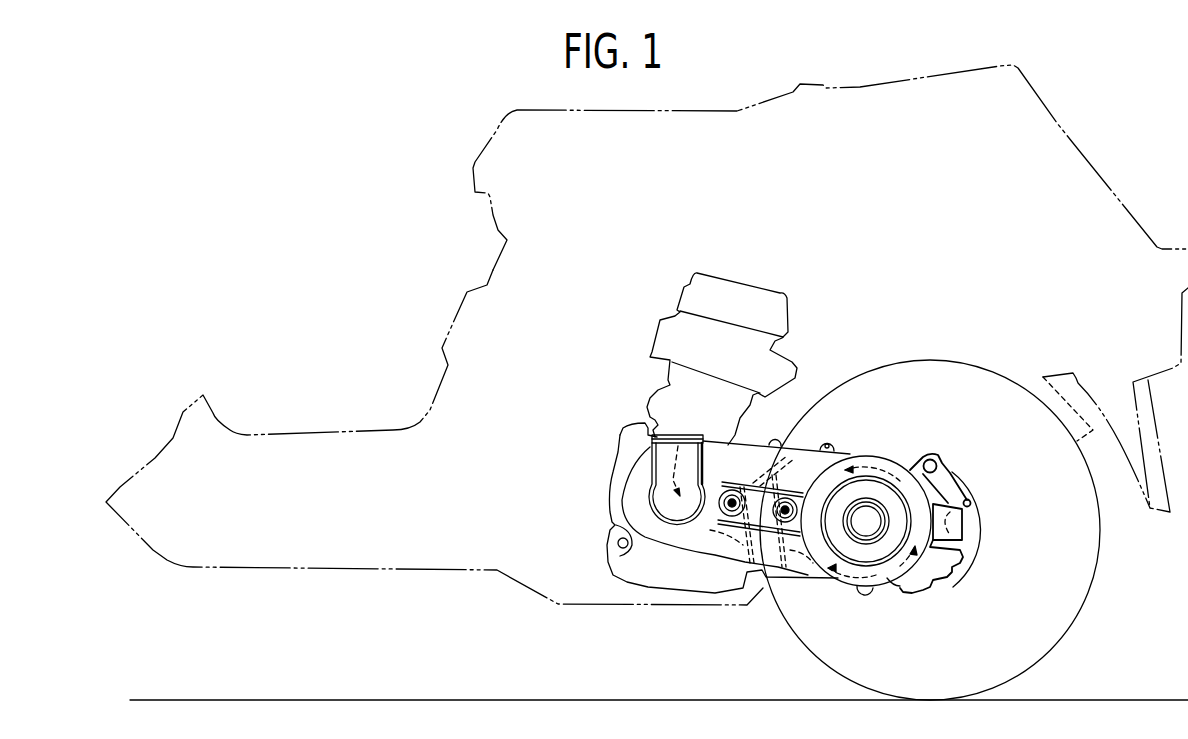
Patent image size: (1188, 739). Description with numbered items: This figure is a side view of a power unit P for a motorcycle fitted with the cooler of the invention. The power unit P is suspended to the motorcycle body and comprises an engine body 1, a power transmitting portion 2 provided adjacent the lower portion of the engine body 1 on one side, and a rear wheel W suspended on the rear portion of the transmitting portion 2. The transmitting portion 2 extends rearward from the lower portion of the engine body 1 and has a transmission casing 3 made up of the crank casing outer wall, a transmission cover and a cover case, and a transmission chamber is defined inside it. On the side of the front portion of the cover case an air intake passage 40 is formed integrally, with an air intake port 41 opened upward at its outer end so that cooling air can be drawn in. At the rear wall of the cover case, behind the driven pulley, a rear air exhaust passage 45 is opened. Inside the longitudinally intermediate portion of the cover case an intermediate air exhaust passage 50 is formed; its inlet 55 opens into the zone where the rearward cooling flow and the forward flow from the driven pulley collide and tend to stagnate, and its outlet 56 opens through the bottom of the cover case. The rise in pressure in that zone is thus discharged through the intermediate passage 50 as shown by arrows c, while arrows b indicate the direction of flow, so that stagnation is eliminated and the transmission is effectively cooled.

The engine body 1 is at (738, 410).
The power transmitting portion 2 is at (846, 452).
The transmission casing 3 is at (750, 455).
The air intake passage 40 is at (687, 470).
The air intake port 41 is at (688, 441).
The rear air exhaust passage 45 is at (964, 543).
The intermediate air exhaust passage 50 is at (746, 563).
The inlet 55 is at (803, 468).
The outlet 56 is at (866, 525).
The power unit P is at (625, 421).
The rear wheel W is at (918, 360).
The arrows b is at (672, 450).
The arrows c is at (786, 458).